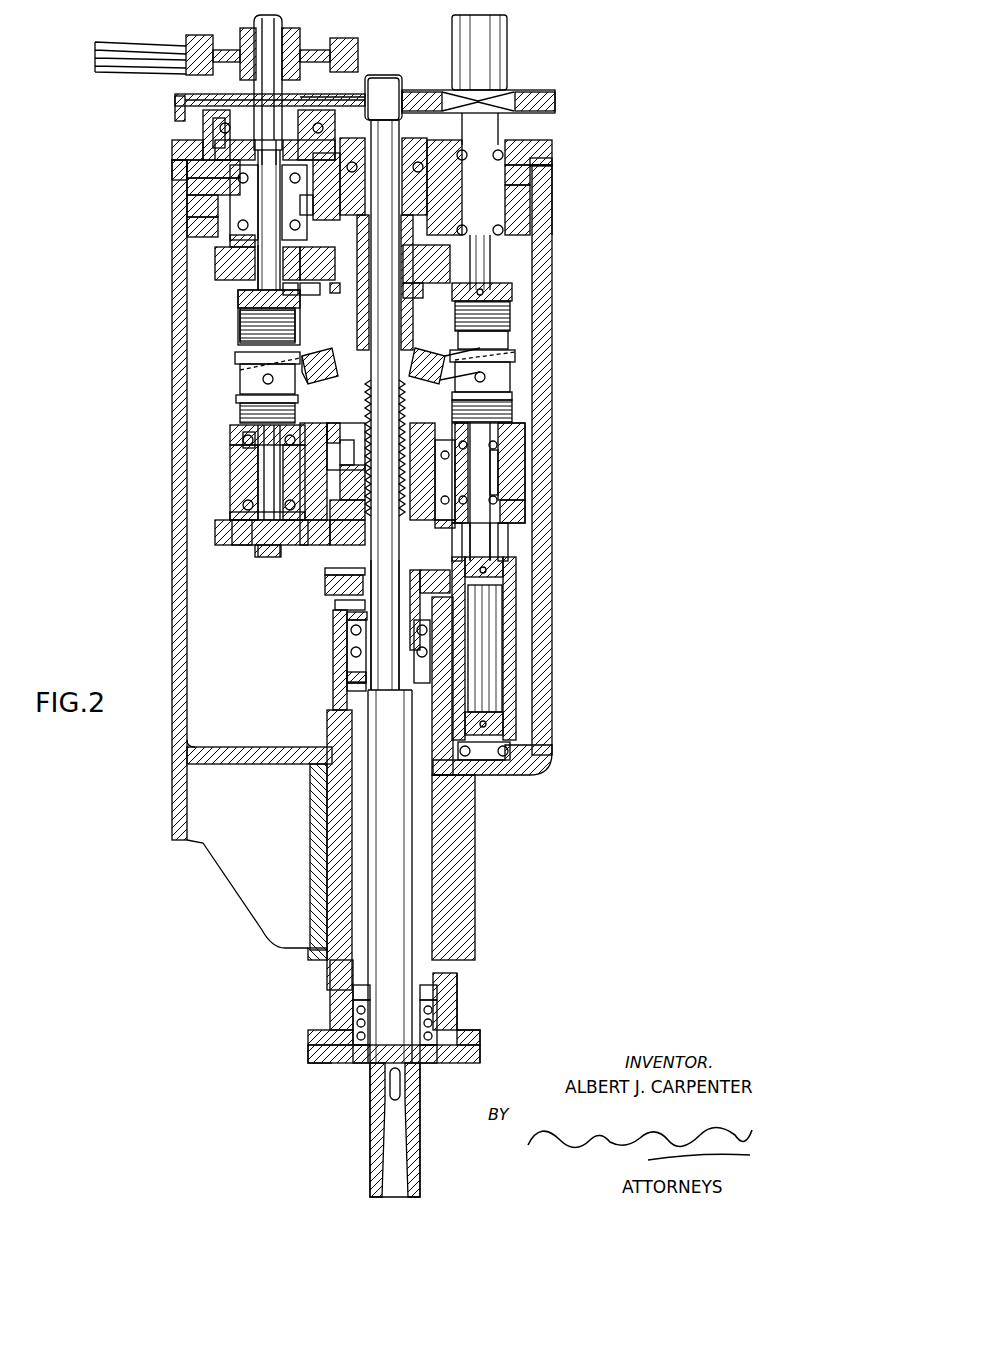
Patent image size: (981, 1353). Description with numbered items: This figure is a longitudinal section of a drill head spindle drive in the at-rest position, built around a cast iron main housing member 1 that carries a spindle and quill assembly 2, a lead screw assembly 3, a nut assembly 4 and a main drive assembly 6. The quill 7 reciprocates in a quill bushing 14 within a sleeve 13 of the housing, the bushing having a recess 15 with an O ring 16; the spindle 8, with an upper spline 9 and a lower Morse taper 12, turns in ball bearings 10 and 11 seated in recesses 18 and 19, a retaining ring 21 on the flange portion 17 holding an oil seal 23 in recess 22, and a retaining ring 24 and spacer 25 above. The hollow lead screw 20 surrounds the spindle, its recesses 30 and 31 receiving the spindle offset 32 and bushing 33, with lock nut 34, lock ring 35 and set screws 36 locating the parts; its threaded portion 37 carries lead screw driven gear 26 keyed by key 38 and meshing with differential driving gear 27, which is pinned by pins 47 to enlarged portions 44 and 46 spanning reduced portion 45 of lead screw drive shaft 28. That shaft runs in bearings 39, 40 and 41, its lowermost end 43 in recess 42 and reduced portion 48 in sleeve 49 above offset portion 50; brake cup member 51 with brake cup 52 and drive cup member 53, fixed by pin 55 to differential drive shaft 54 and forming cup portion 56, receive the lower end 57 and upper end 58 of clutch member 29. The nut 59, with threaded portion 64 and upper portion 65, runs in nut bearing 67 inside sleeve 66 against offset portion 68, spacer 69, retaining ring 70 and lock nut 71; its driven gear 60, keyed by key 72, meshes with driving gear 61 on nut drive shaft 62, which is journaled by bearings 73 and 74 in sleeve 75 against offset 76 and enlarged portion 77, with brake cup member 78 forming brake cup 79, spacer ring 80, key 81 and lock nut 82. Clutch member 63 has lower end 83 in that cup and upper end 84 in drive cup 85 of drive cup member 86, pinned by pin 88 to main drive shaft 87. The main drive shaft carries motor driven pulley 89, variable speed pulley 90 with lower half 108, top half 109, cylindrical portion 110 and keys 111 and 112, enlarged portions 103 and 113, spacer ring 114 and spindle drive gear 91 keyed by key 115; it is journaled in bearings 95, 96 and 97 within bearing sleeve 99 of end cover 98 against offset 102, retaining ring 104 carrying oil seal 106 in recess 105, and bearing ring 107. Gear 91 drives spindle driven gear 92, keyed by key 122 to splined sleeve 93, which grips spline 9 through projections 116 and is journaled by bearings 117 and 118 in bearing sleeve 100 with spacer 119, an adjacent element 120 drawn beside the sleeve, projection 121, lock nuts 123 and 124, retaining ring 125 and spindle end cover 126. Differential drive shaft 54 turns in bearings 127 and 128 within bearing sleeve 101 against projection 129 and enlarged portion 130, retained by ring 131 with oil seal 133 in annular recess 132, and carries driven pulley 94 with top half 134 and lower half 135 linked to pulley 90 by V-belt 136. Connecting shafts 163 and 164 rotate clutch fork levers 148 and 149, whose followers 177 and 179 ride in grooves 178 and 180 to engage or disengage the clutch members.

The main housing member 1 is at (170, 366).
The spindle and quill assembly 2 is at (468, 1003).
The lead screw assembly 3 is at (553, 520).
The nut assembly 4 is at (212, 528).
The main drive assembly 6 is at (170, 132).
The quill 7 is at (268, 205).
The spindle 8 is at (402, 920).
The spline 9 is at (396, 105).
The ball bearing 10 is at (345, 1015).
The ball bearing 11 is at (340, 640).
The Morse taper 12 is at (404, 1166).
The sleeve 13 is at (335, 872).
The quill bushing 14 is at (318, 832).
The recess 15 is at (330, 960).
The O ring 16 is at (462, 950).
The flange portion 17 is at (310, 1050).
The recess 18 is at (310, 1036).
The recess 19 is at (412, 645).
The lead screw 20 is at (340, 572).
The retaining ring 21 is at (322, 1066).
The recess 22 is at (360, 1070).
The oil seal 23 is at (428, 1068).
The retaining ring 24 is at (348, 620).
The spacer 25 is at (350, 606).
The lead screw driven gear 26 is at (432, 580).
The lead screw differential driving gear 27 is at (512, 630).
The lead screw drive shaft 28 is at (505, 546).
The lead screw drive shaft clutch member 29 is at (520, 386).
The recess 30 is at (358, 650).
The recess 31 is at (358, 660).
The offset 32 is at (370, 690).
The bushing 33 is at (365, 678).
The lock nut 34 is at (418, 700).
The lock ring 35 is at (440, 992).
The set screws 36 is at (448, 1000).
The threaded portion 37 is at (376, 398).
The key 38 is at (335, 586).
The ball bearing 39 is at (497, 760).
The ball bearing 40 is at (526, 490).
The ball bearing 41 is at (526, 440).
The recess 42 is at (472, 777).
The lowermost end 43 is at (490, 762).
The enlarged portion 44 is at (500, 721).
The reduced portion 45 is at (484, 660).
The enlarged portion 46 is at (492, 568).
The pins 47 is at (486, 574).
The reduced portion 48 is at (500, 470).
The sleeve 49 is at (500, 458).
The offset portion 50 is at (505, 516).
The lead screw brake cup member 51 is at (520, 408).
The brake cup 52 is at (516, 393).
The drive cup member 53 is at (516, 297).
The differential drive shaft 54 is at (492, 272).
The pin 55 is at (486, 291).
The drive cup portion 56 is at (508, 336).
The lower end 57 is at (522, 426).
The upper end 58 is at (510, 316).
The nut 59 is at (345, 510).
The nut driven gear 60 is at (350, 530).
The nut driving gear 61 is at (306, 545).
The nut drive shaft 62 is at (250, 466).
The nut drive shaft clutch member 63 is at (238, 358).
The threaded portion 64 is at (386, 555).
The upper portion 65 is at (356, 468).
The sleeve 66 is at (428, 422).
The nut bearing 67 is at (455, 478).
The offset portion 68 is at (455, 520).
The spacer 69 is at (312, 422).
The retaining ring 70 is at (336, 422).
The lock nut 71 is at (350, 440).
The key 72 is at (462, 535).
The ball bearing 73 is at (245, 502).
The ball bearing 74 is at (242, 444).
The sleeve 75 is at (245, 456).
The offset 76 is at (255, 520).
The enlarged portion 77 is at (260, 480).
The brake cup member 78 is at (225, 420).
The brake cup 79 is at (238, 402).
The spacer ring 80 is at (240, 536).
The key 81 is at (255, 550).
The lock nut 82 is at (262, 558).
The lower end 83 is at (240, 396).
The upper end 84 is at (240, 316).
The drive cup 85 is at (240, 336).
The drive cup member 86 is at (232, 300).
The main drive shaft 87 is at (255, 263).
The pin 88 is at (245, 292).
The motor driven pulley 89 is at (240, 32).
The variable speed differential drive pulley 90 is at (170, 100).
The spindle drive gear 91 is at (225, 258).
The spindle driven gear 92 is at (418, 286).
The spindle splined sleeve 93 is at (384, 340).
The variable speed differential driven pulley 94 is at (560, 86).
The ball bearing 95 is at (232, 225).
The ball bearing 96 is at (235, 168).
The ball bearing 97 is at (200, 126).
The end cover 98 is at (180, 172).
The bearing sleeve 99 is at (180, 195).
The bearing sleeve 100 is at (532, 190).
The bearing sleeve 101 is at (548, 202).
The offset 102 is at (230, 241).
The enlarged diameter portion 103 is at (215, 205).
The retaining ring 104 is at (220, 148).
The recess 105 is at (268, 138).
The oil seal 106 is at (272, 146).
The bearing ring 107 is at (208, 135).
The lower half 108 is at (178, 107).
The top half 109 is at (190, 100).
The cylindrical portion 110 is at (312, 100).
The key 111 is at (238, 101).
The key 112 is at (302, 30).
The enlarged diameter portion 113 is at (270, 215).
The spacer ring 114 is at (296, 258).
The key 115 is at (292, 292).
The projections 116 is at (362, 300).
The bearing 117 is at (303, 228).
The bearing 118 is at (325, 196).
The spacer 119 is at (310, 205).
The block 120 is at (420, 246).
The projection 121 is at (352, 264).
The key 122 is at (345, 292).
The lock nut 123 is at (412, 300).
The lock nut 124 is at (414, 142).
The retaining ring 125 is at (442, 150).
The spindle end cover 126 is at (380, 78).
The ball bearing 127 is at (506, 238).
The ball bearing 128 is at (532, 180).
The projection 129 is at (492, 256).
The enlarged diameter portion 130 is at (506, 215).
The retaining ring 131 is at (542, 160).
The annular recess 132 is at (522, 150).
The oil seal 133 is at (497, 140).
The top half 134 is at (520, 90).
The lower half 135 is at (540, 113).
The V-belt 136 is at (555, 100).
The clutch fork lever 148 is at (308, 360).
The clutch fork lever 149 is at (450, 360).
The connecting shaft 163 is at (422, 362).
The connecting shaft 164 is at (340, 362).
The clutch follower member 177 is at (240, 368).
The groove 178 is at (238, 380).
The clutch follower 179 is at (520, 358).
The groove 180 is at (516, 372).